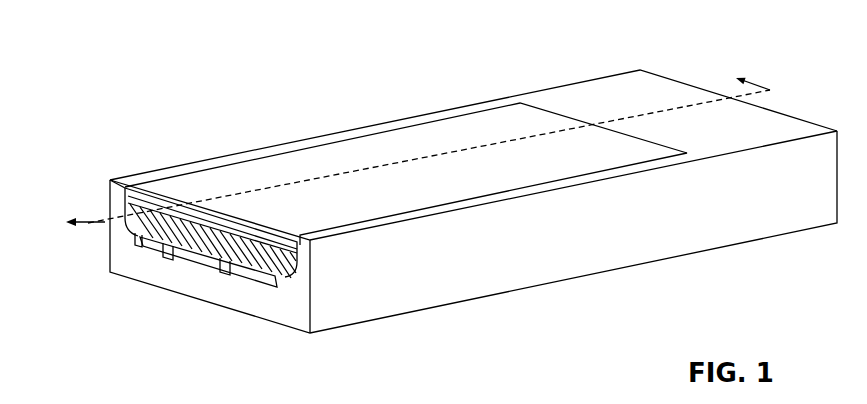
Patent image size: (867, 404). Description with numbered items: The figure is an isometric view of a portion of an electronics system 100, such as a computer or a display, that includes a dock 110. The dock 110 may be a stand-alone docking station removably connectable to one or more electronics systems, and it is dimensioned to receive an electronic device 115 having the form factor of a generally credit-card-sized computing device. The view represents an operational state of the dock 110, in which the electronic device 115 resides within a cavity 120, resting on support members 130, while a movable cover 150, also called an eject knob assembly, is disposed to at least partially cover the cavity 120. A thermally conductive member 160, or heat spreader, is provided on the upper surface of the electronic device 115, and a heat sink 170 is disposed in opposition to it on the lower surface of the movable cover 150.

The electronics system 100 is at (537, 29).
The dock 110 is at (338, 316).
The electronic device 115 is at (138, 241).
The cavity 120 is at (194, 259).
The support members 130 is at (157, 258).
The movable cover 150 is at (264, 178).
The thermally conductive member 160 is at (297, 240).
The heat sink 170 is at (250, 236).